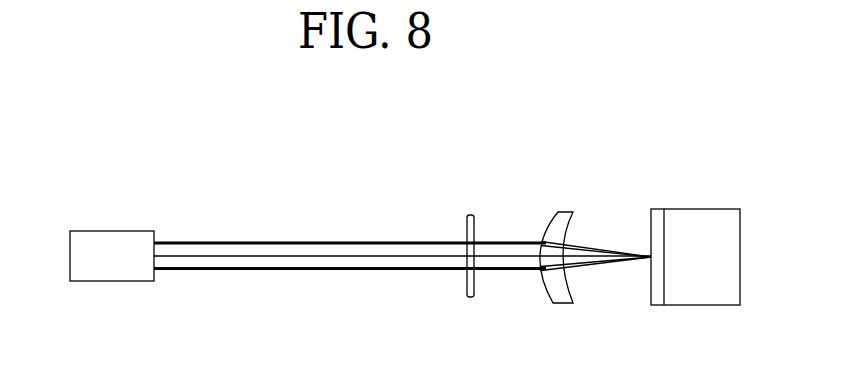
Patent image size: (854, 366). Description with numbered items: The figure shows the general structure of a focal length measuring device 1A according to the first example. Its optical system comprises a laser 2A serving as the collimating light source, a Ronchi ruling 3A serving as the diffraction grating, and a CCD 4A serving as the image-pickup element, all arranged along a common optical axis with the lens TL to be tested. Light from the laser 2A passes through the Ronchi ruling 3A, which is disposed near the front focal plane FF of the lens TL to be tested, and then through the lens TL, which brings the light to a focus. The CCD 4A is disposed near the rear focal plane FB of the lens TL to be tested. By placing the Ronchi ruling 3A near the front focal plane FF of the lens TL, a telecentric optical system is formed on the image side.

The focal length measuring device 1A is at (305, 193).
The laser 2A is at (130, 231).
The Ronchi ruling 3A is at (472, 214).
The CCD 4A is at (688, 209).
The front focal plane FF is at (472, 322).
The lens to be tested TL is at (562, 236).
The rear focal plane FB is at (657, 331).